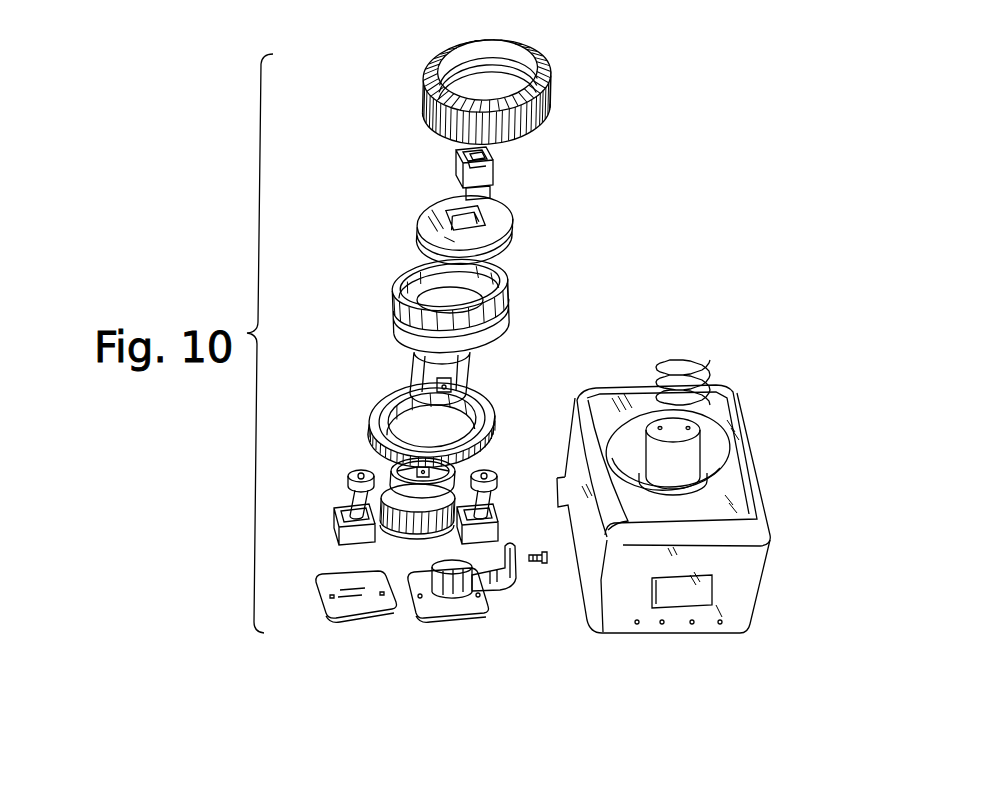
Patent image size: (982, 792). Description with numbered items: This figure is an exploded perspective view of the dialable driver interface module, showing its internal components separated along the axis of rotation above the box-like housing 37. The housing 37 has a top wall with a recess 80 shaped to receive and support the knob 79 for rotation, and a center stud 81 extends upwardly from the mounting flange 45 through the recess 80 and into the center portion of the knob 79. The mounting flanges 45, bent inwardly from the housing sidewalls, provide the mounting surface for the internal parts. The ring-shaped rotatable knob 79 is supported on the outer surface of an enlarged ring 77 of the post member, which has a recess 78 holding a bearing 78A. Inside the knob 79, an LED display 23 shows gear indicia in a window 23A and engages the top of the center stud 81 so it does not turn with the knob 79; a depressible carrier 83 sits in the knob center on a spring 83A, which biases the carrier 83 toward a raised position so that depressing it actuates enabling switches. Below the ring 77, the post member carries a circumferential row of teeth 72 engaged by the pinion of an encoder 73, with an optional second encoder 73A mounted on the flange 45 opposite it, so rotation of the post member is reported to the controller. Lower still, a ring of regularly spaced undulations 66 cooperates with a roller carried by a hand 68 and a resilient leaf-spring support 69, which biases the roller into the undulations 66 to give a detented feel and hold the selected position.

The knob 79 is at (549, 95).
The LED display 23 is at (457, 176).
The window 23A is at (493, 168).
The depressible carrier 83 is at (513, 240).
The enlarged ring 77 is at (513, 302).
The recess 78 is at (437, 305).
The bearing 78A is at (377, 417).
The circumferential row of teeth 72 is at (388, 472).
The ring of undulations 66 is at (418, 524).
The encoder 73 is at (346, 481).
The second encoder 73A is at (496, 480).
The mounting flange 45 is at (319, 602).
The hand 68 is at (445, 595).
The leaf-spring support 69 is at (503, 588).
The spring 83A is at (700, 362).
The box-like housing 37 is at (764, 496).
The recess 80 is at (716, 452).
The center stud 81 is at (648, 445).